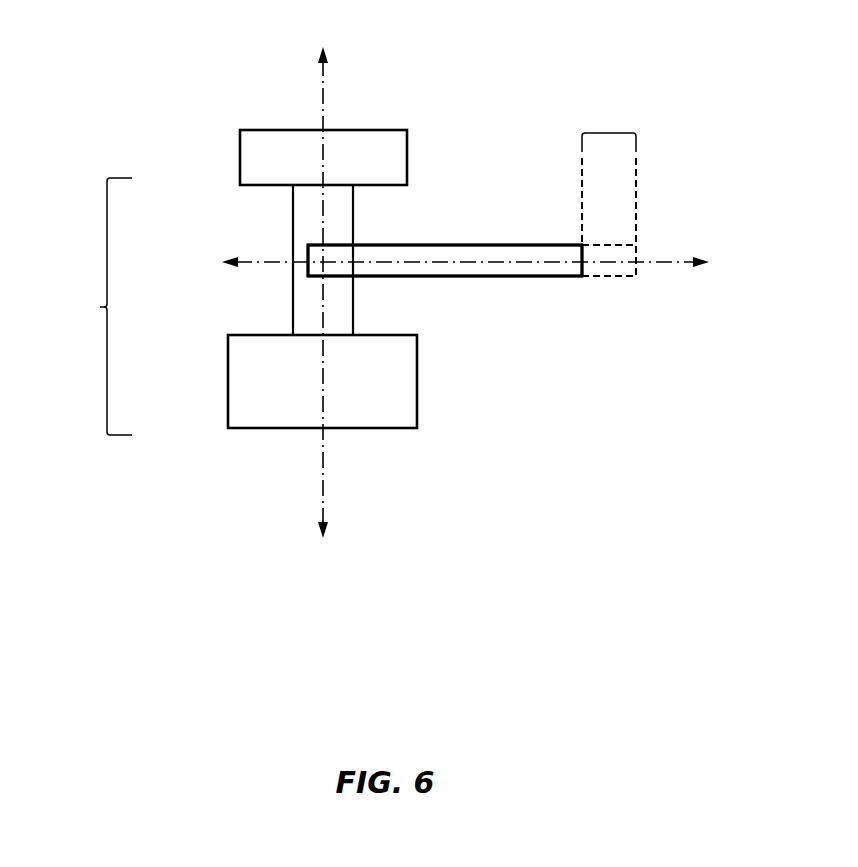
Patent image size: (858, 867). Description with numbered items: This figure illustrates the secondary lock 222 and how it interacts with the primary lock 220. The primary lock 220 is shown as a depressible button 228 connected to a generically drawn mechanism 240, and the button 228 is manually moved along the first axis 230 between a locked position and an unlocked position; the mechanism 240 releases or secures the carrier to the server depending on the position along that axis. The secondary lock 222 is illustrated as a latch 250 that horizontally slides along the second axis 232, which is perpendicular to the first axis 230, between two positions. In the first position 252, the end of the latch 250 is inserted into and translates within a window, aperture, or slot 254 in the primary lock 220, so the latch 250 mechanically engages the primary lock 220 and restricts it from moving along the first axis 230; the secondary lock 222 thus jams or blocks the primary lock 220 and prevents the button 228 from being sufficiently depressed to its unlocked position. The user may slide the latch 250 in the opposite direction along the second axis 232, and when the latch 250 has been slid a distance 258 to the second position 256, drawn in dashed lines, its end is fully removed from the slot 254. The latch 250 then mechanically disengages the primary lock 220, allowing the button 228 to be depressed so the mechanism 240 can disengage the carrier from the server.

The primary lock 220 is at (100, 307).
The secondary lock 222 is at (498, 277).
The depressible button 228 is at (240, 161).
The first axis L1-L1 230 is at (300, 27).
The second axis L2-L2 232 is at (742, 262).
The mechanism 240 is at (228, 368).
The latch 250 is at (473, 315).
The first position 252 is at (582, 185).
The slot 254 is at (358, 243).
The second position 256 is at (636, 183).
The distance 258 is at (611, 133).